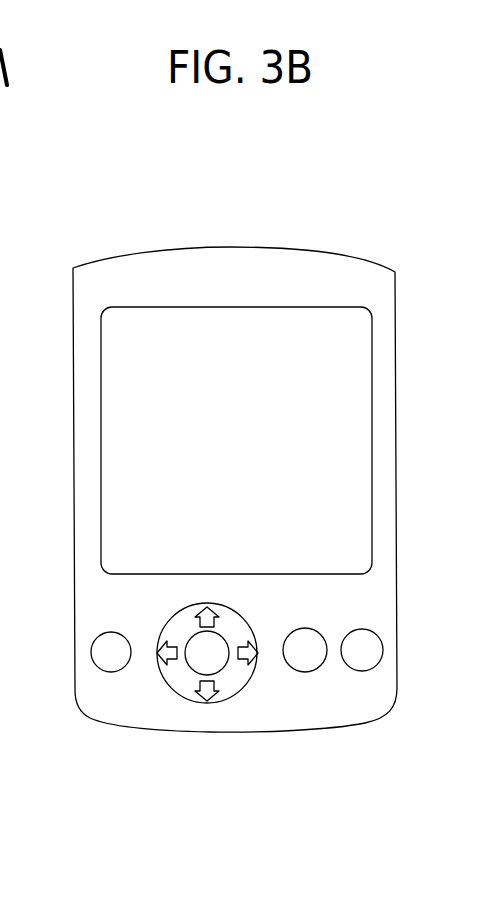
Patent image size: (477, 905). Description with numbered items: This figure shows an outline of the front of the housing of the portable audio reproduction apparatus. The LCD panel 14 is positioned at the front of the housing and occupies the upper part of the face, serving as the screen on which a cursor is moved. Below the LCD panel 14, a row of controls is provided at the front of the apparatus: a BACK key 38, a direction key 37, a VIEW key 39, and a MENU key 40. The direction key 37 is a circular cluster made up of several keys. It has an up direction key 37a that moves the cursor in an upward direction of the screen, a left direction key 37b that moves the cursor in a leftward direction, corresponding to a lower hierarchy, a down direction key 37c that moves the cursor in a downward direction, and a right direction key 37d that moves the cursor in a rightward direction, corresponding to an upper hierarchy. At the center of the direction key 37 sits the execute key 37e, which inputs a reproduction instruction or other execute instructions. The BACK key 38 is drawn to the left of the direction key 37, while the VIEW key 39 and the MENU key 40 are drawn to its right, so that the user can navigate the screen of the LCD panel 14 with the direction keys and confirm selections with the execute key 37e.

The LCD panel 14 is at (172, 355).
The direction key 37 is at (160, 693).
The up direction key 37a is at (207, 606).
The left direction key 37b is at (167, 650).
The down direction key 37c is at (207, 702).
The right direction key 37d is at (244, 656).
The execute key 37e is at (215, 667).
The BACK key 38 is at (105, 647).
The VIEW key 39 is at (300, 645).
The MENU key 40 is at (367, 657).